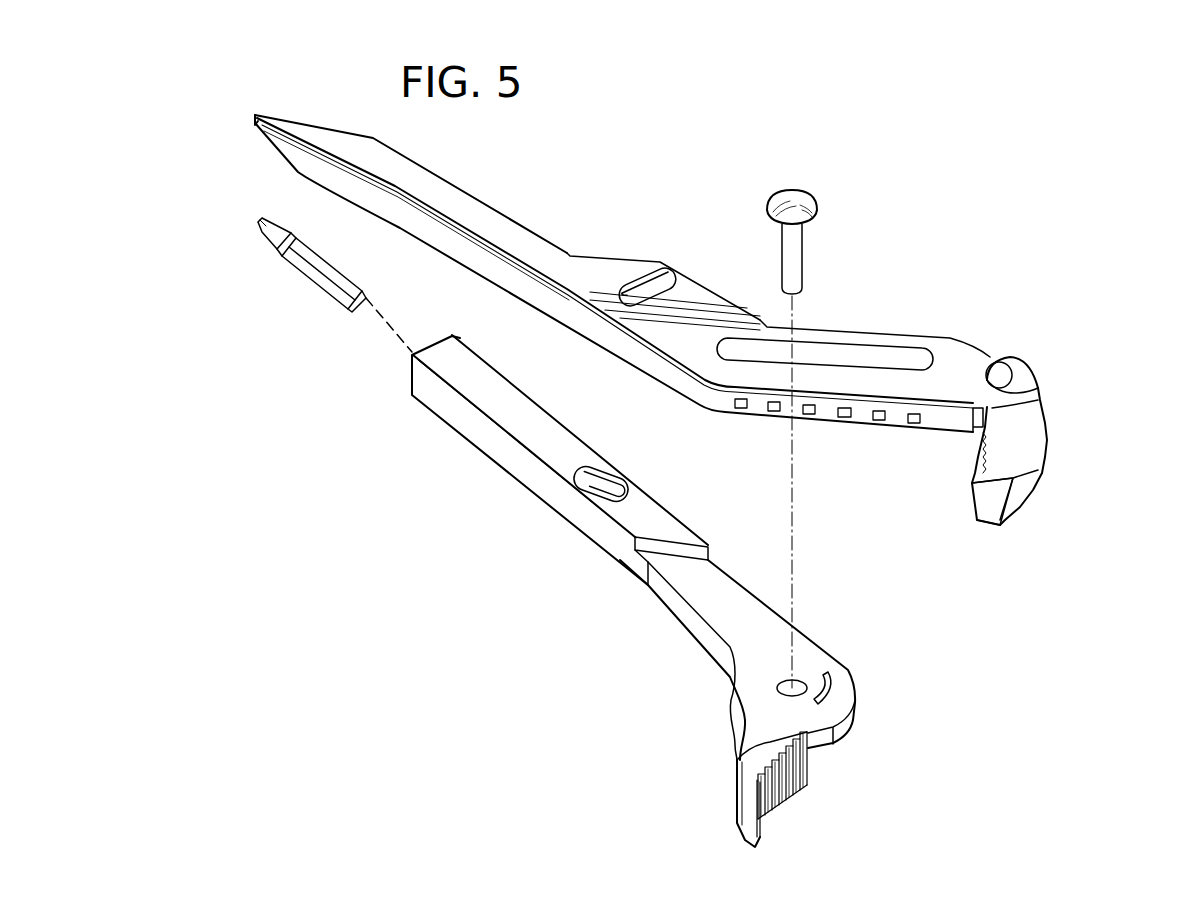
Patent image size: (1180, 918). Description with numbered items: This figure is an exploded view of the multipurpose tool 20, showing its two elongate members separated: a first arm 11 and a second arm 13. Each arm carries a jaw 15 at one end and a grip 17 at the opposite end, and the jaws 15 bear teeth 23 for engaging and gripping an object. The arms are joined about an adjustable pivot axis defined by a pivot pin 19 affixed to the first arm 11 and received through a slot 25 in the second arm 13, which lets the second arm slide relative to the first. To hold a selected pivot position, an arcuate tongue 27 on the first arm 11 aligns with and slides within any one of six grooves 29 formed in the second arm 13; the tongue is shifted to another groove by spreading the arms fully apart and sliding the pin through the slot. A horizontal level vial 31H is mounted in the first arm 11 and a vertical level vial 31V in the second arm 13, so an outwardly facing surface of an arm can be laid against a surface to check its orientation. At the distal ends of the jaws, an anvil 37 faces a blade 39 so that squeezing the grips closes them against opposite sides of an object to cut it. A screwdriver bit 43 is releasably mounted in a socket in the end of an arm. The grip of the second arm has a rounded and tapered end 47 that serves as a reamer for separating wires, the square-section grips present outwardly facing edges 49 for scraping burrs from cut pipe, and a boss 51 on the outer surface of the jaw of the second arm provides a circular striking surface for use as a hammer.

The first arm 11 is at (560, 532).
The second arm 13 is at (567, 243).
The jaw 15 is at (1023, 440).
The grip 17 is at (398, 192).
The pivot pin 19 is at (792, 205).
The multipurpose tool 20 is at (982, 196).
The teeth 23 is at (975, 455).
The slot 25 is at (888, 362).
The tongue 27 is at (815, 692).
The grooves 29 is at (741, 416).
The horizontal level vial 31H is at (600, 485).
The vertical level vial 31V is at (650, 292).
The anvil 37 is at (757, 820).
The blade 39 is at (984, 502).
The screwdriver bit 43 is at (315, 278).
The rounded and tapered end 47 is at (257, 112).
The outwardly facing edges 49 is at (453, 222).
The boss 51 is at (1032, 370).